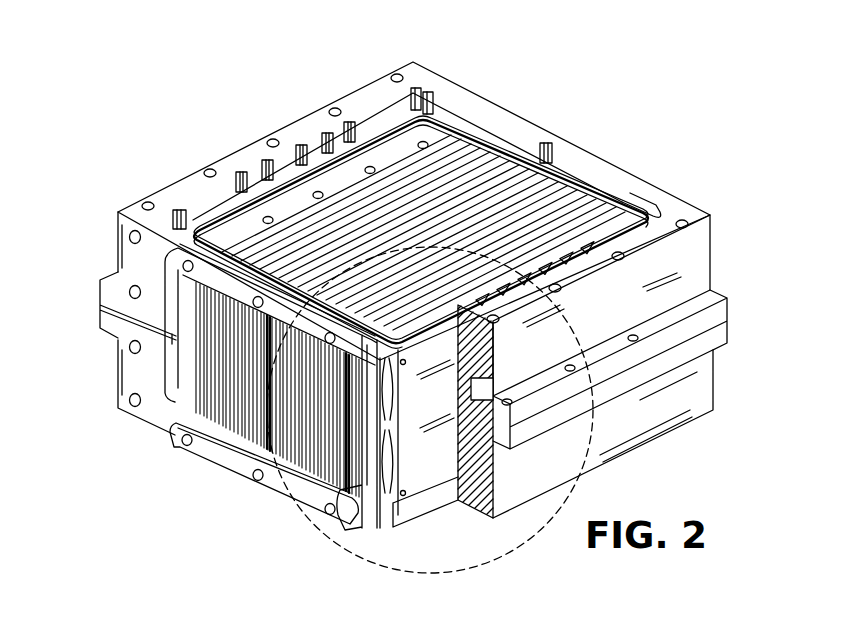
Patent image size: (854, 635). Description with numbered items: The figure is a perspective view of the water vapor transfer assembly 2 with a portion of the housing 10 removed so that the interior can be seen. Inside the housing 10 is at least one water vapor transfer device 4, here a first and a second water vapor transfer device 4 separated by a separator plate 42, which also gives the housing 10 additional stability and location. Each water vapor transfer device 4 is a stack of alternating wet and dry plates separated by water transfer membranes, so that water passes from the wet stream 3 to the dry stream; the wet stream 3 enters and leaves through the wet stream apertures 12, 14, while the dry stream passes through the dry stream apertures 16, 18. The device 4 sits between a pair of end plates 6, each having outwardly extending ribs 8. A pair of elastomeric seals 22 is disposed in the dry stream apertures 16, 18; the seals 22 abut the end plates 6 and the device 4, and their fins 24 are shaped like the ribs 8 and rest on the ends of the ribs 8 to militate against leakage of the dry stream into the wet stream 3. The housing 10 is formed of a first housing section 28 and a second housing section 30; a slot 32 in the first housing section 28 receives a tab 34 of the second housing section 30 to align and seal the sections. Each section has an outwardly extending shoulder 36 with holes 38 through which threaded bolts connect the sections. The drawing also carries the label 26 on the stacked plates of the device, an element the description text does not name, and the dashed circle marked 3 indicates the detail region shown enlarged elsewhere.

The water vapor transfer assembly 2 is at (150, 102).
The wet stream 3 is at (537, 543).
The water vapor transfer device 4 is at (470, 160).
The end plates 6 is at (398, 157).
The ribs 8 is at (262, 176).
The housing 10 is at (525, 122).
The wet stream aperture 12 is at (214, 371).
The wet stream aperture 14 is at (626, 130).
The dry stream aperture 16 is at (188, 220).
The dry stream aperture 18 is at (240, 495).
The elastomeric seals 22 is at (636, 196).
The fins 24 is at (594, 258).
The plates 26 is at (352, 468).
The first housing section 28 is at (693, 258).
The second housing section 30 is at (713, 378).
The slot 32 is at (473, 383).
The tab 34 is at (478, 460).
The outwardly extending shoulder 36 is at (718, 335).
The holes 38 is at (633, 338).
The separator plate 42 is at (548, 150).